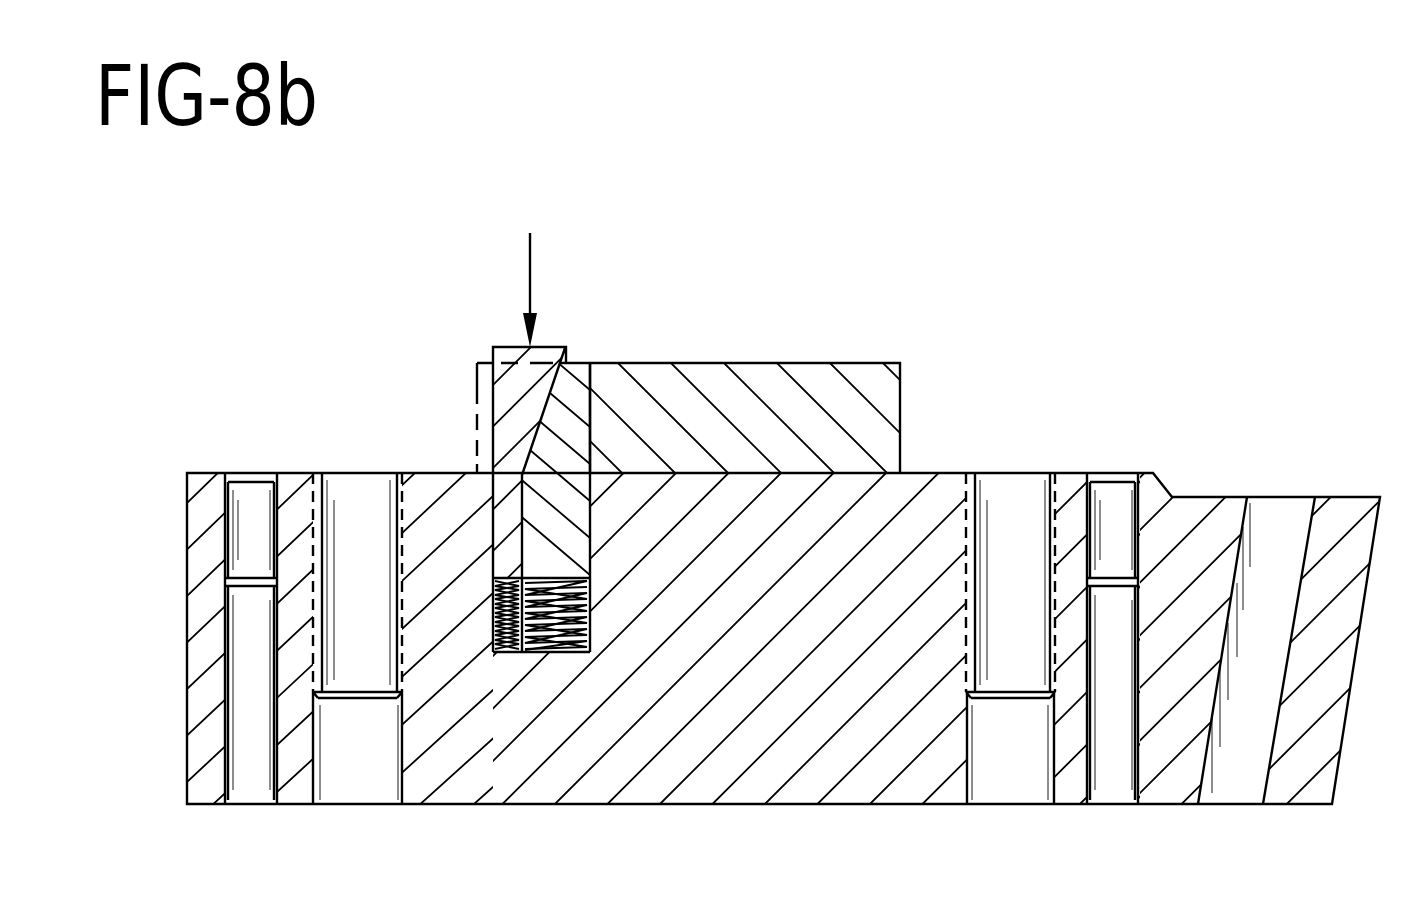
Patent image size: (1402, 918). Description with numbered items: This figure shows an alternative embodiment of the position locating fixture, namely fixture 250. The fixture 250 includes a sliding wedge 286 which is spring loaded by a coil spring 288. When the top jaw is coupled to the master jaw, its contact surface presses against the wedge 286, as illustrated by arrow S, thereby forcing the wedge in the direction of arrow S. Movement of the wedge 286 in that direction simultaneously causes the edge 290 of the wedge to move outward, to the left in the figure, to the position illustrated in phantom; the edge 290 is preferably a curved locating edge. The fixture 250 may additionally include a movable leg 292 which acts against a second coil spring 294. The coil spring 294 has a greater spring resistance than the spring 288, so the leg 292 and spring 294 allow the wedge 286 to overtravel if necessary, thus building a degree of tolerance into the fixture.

The fixture 250 is at (904, 360).
The sliding wedge 286 is at (553, 347).
The coil spring 288 is at (500, 653).
The edge 290 is at (477, 404).
The movable leg 292 is at (590, 432).
The coil spring 294 is at (547, 653).
The arrow S is at (528, 267).